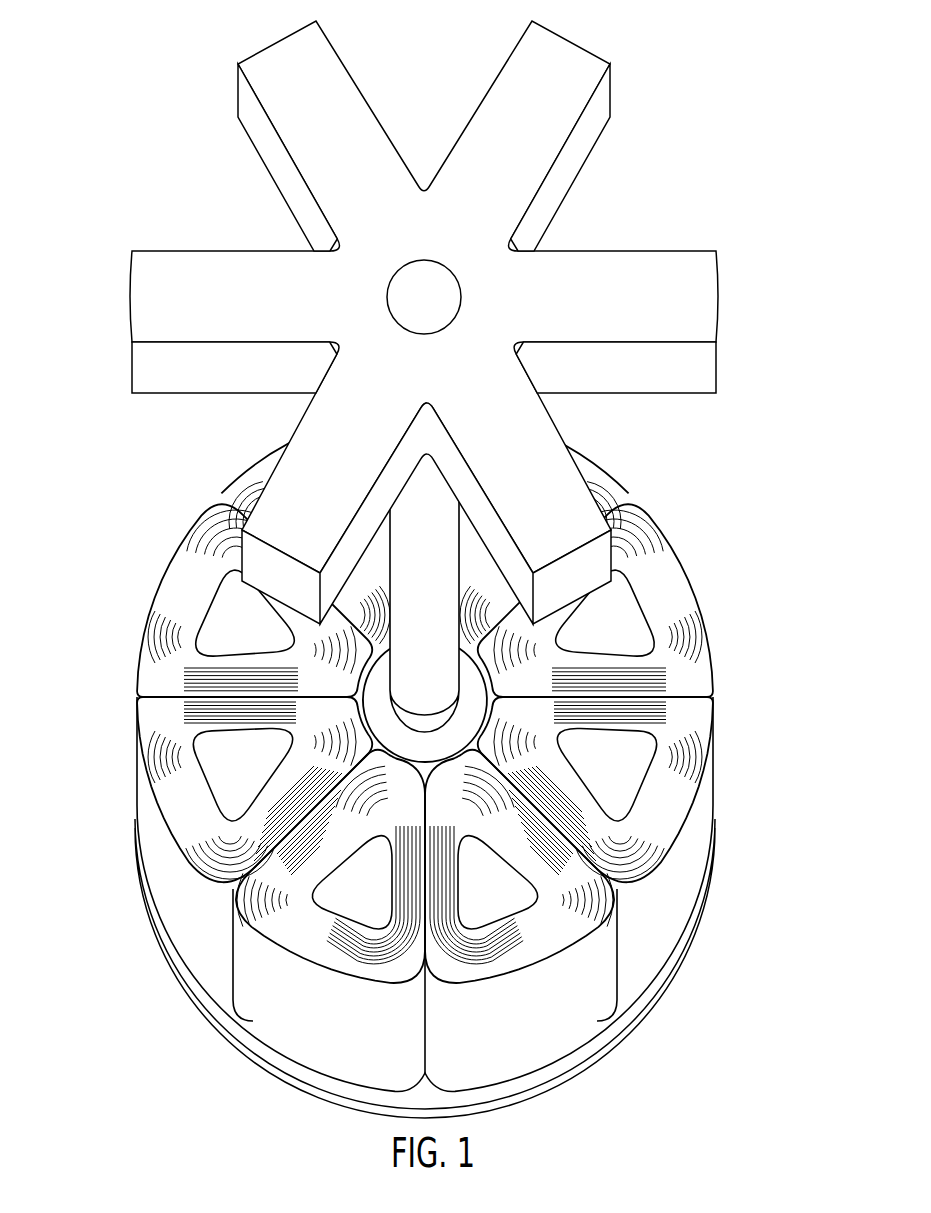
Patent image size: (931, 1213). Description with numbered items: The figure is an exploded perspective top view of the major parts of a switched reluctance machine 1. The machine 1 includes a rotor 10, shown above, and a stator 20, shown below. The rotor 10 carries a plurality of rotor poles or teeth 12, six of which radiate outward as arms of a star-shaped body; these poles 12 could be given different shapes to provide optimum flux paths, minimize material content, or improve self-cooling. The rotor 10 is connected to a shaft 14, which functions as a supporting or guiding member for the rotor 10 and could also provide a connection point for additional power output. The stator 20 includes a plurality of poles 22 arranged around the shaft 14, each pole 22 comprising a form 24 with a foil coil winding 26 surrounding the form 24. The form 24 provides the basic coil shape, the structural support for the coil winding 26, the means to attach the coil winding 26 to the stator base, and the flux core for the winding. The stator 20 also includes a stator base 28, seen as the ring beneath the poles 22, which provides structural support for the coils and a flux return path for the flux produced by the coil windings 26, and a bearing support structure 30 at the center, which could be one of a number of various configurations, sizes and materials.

The machine 1 is at (421, 569).
The rotor 10 is at (650, 266).
The rotor poles 12 is at (292, 81).
The shaft 14 is at (413, 630).
The stator 20 is at (712, 807).
The poles 22 is at (433, 757).
The form 24 is at (652, 581).
The foil coil winding 26 is at (642, 547).
The stator base 28 is at (684, 977).
The bearing support structure 30 is at (425, 705).